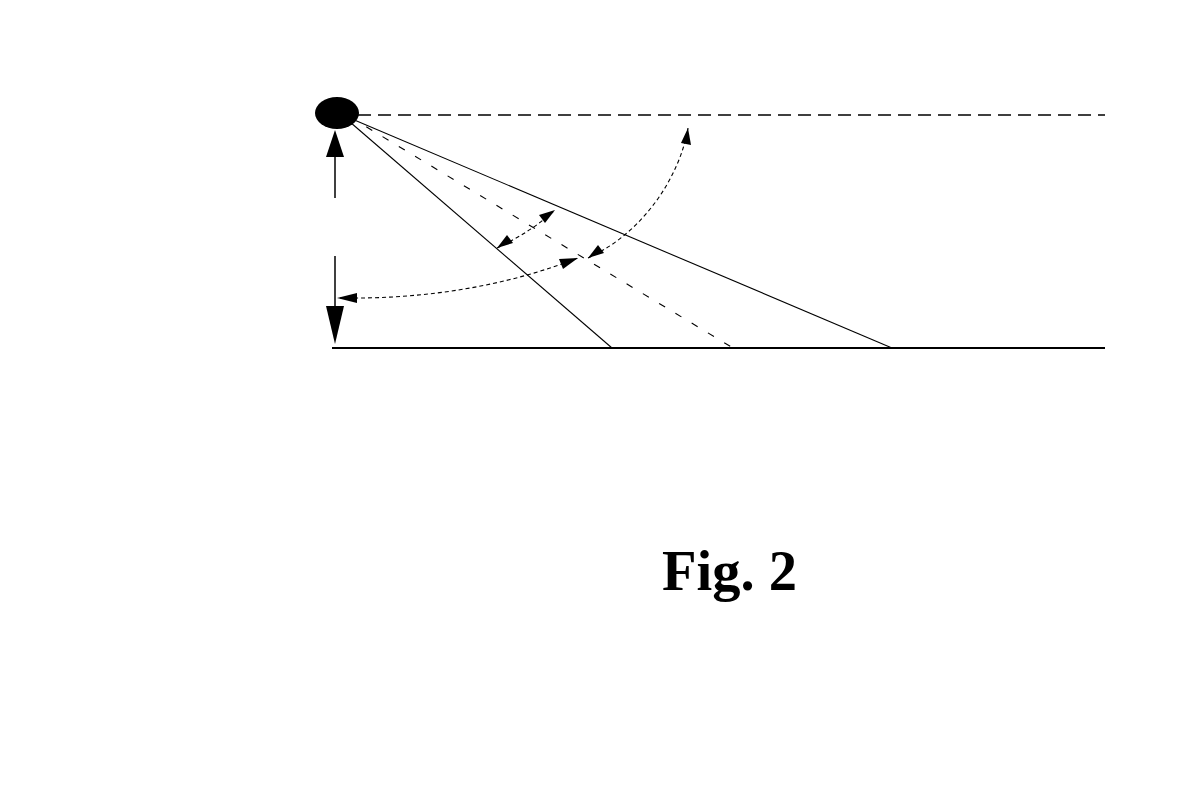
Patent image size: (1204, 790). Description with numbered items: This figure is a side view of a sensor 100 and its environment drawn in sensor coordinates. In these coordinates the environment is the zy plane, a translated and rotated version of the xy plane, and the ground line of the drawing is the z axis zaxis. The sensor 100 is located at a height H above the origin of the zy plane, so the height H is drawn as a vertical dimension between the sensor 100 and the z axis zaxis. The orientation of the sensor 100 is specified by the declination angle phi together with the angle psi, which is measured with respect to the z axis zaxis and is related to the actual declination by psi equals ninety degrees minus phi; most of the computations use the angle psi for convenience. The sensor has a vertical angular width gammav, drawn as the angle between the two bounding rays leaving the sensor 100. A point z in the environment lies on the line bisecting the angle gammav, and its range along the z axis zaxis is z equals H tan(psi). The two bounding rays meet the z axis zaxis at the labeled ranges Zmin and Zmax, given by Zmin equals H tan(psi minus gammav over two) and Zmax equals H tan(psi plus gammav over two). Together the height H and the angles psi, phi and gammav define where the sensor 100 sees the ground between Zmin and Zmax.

The sensor 100 is at (327, 97).
The height of the sensor H is at (335, 237).
The minimum range Zmin is at (490, 260).
The maximum range Zmax is at (643, 260).
The point z is at (547, 256).
The z axis zaxis is at (736, 372).
The angle psi is at (457, 279).
The vertical angular width gammav is at (542, 202).
The declination angle phi is at (639, 193).